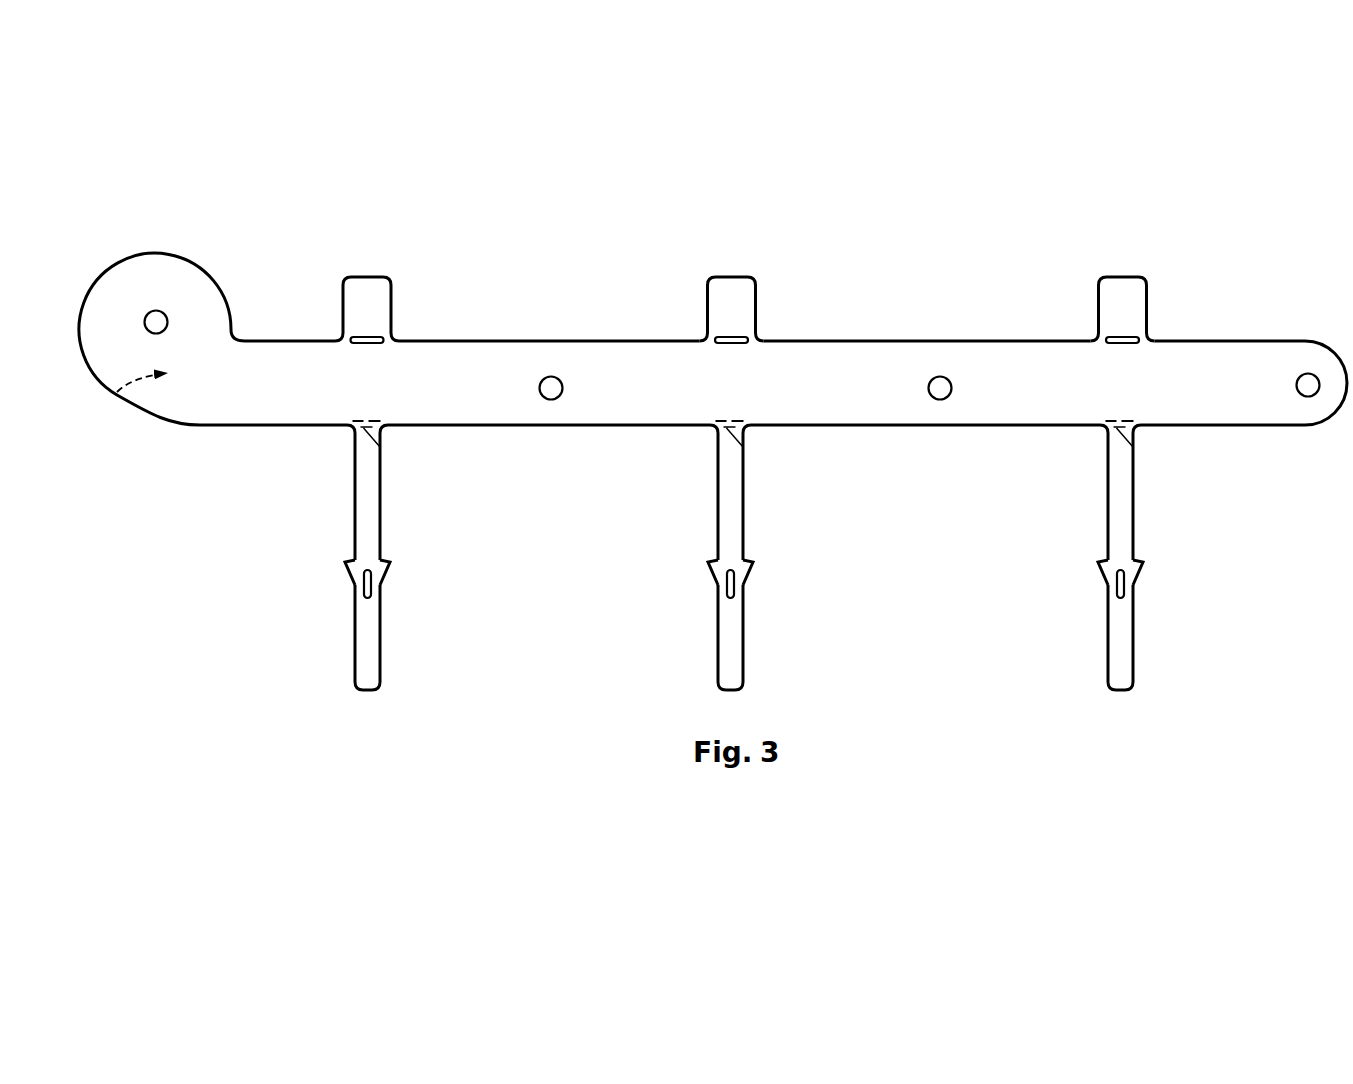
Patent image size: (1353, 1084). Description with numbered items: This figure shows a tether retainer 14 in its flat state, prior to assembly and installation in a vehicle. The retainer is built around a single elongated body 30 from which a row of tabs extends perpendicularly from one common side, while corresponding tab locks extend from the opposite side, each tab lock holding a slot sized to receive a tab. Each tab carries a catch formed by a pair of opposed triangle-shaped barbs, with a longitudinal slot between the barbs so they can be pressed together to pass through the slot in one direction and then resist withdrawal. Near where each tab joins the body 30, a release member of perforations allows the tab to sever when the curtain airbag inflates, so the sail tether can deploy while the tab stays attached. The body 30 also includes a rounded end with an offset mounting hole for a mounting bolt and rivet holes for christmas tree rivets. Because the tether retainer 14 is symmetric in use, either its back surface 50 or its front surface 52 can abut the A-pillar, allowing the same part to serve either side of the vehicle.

The tether retainer 14 is at (957, 280).
The body 30 is at (617, 398).
The back surface 50 is at (116, 393).
The front surface 52 is at (185, 398).